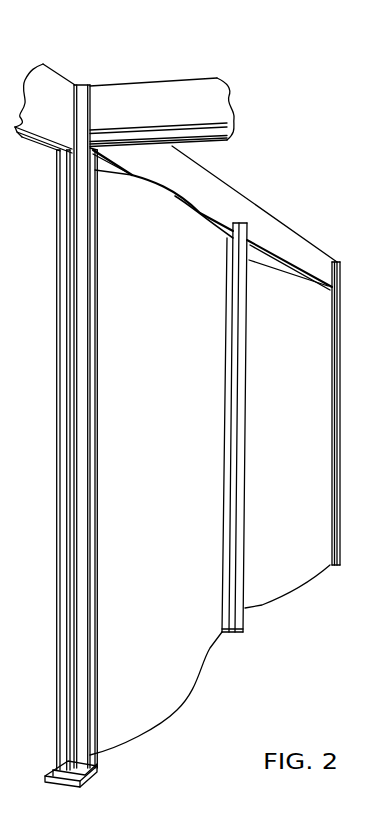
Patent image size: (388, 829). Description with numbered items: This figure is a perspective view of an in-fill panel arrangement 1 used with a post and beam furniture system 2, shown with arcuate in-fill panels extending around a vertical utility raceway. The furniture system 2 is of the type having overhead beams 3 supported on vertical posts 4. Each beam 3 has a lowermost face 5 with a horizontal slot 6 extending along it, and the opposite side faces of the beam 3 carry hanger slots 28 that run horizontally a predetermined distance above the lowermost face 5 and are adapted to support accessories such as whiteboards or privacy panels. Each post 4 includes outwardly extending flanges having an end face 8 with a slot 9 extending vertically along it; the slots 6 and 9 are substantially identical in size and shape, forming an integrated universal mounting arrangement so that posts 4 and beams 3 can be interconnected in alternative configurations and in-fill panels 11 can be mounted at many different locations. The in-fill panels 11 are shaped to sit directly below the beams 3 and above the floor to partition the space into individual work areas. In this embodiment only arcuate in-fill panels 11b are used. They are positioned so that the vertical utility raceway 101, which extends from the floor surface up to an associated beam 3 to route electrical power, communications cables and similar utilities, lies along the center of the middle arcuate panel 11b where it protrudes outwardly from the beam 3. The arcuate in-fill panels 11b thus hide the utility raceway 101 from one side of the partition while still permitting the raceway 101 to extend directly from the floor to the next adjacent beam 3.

The in-fill panel arrangement 1 is at (192, 408).
The post and beam furniture system 2 is at (328, 253).
The overhead beam 3 is at (193, 92).
The vertical post 4 is at (62, 645).
The lowermost face 5 is at (213, 147).
The horizontal slot 6 is at (47, 148).
The end face 8 is at (60, 583).
The slot 9 is at (65, 532).
The in-fill panel 11 is at (230, 303).
The arcuate in-fill panel 11b is at (245, 660).
The hanger slot 28 is at (123, 130).
The vertical utility raceway 101 is at (245, 447).